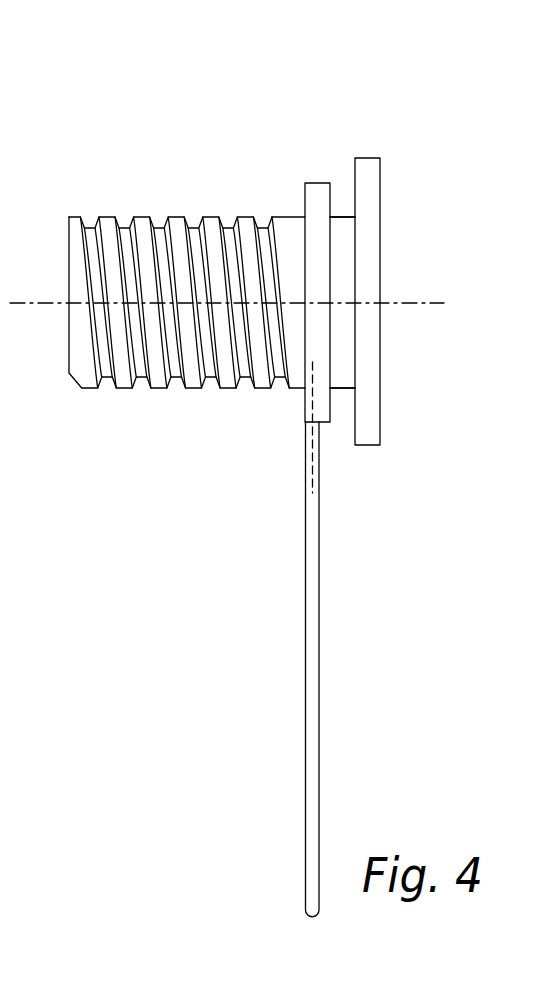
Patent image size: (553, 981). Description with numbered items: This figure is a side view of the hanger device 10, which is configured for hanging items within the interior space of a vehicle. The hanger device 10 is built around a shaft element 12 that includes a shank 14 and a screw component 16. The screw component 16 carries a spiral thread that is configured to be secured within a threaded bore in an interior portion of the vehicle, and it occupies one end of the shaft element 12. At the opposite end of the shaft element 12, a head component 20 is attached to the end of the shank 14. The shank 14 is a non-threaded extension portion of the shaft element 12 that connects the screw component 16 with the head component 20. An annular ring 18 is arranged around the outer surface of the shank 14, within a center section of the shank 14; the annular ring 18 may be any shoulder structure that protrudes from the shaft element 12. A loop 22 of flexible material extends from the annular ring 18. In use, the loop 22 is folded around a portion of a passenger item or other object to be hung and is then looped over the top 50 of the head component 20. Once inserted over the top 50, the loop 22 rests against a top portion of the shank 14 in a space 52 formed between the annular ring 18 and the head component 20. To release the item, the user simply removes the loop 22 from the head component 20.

The hanger device 10 is at (455, 185).
The shaft element 12 is at (168, 207).
The shank 14 is at (342, 217).
The screw component 16 is at (122, 388).
The annular ring 18 is at (322, 405).
The head component 20 is at (372, 362).
The loop 22 is at (313, 748).
The top 50 is at (367, 158).
The space 52 is at (348, 240).